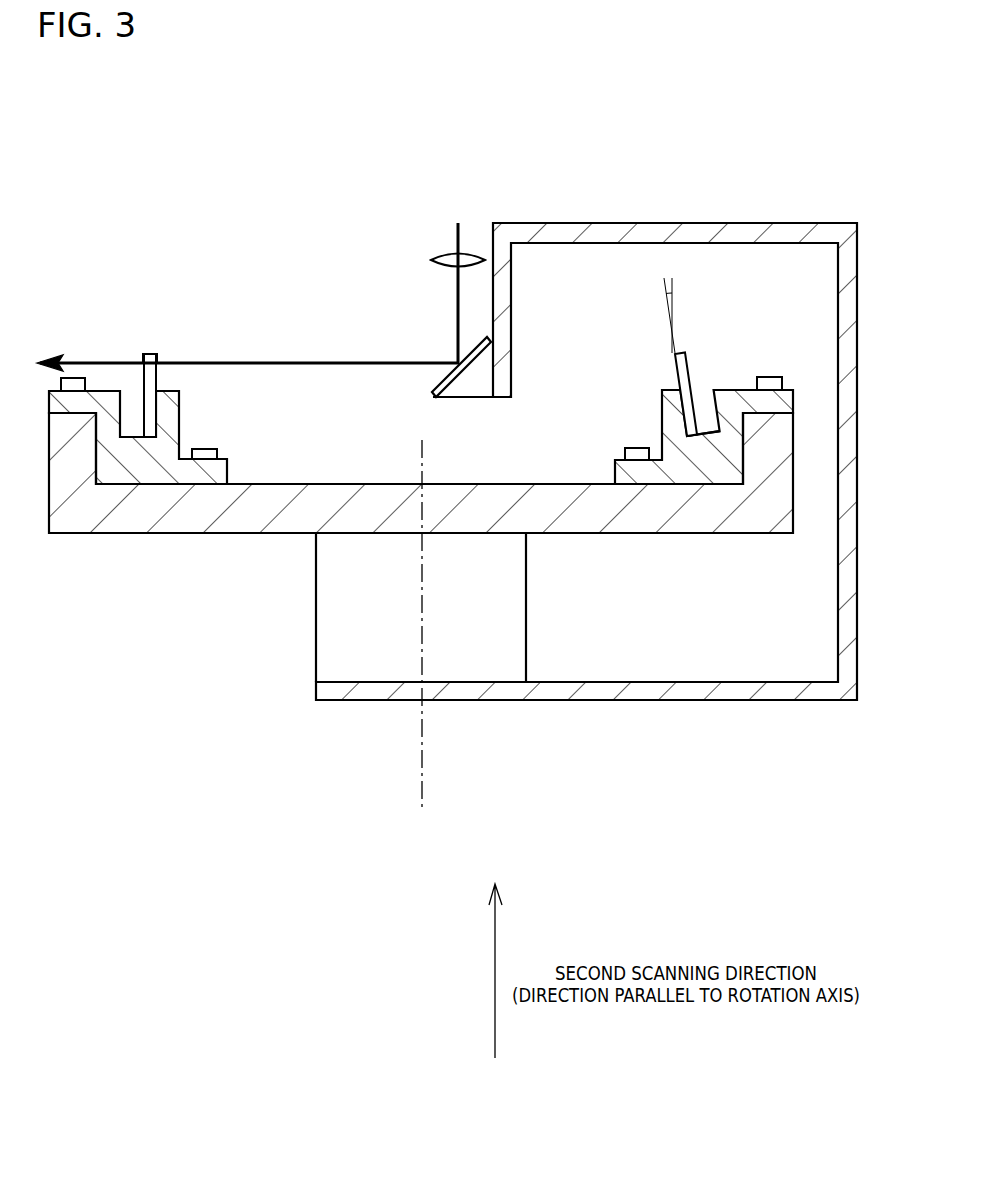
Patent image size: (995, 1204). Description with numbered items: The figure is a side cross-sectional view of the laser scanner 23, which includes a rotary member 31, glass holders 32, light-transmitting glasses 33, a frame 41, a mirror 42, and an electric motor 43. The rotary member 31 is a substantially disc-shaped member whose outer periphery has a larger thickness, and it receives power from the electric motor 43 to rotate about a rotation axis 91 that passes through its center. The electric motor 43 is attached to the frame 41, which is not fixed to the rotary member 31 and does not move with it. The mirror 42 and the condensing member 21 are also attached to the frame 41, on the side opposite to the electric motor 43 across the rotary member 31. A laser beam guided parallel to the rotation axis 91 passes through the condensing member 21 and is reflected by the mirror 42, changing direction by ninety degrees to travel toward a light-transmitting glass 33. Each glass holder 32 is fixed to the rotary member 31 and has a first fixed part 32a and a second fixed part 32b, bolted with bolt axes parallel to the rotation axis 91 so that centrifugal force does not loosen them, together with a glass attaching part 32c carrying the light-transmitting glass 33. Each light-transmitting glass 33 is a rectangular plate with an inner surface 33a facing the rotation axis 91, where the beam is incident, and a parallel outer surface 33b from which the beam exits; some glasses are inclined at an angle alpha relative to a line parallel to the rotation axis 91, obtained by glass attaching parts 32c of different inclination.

The condensing member 21 is at (447, 255).
The laser scanner 23 is at (117, 199).
The rotary member 31 is at (199, 525).
The glass holder 32 is at (214, 416).
The first fixed part 32a is at (615, 470).
The second fixed part 32b is at (748, 395).
The glass attaching part 32c is at (703, 430).
The light-transmitting glass 33 is at (148, 357).
The inner surface 33a is at (158, 360).
The outer surface 33b is at (140, 357).
The frame 41 is at (532, 230).
The mirror 42 is at (428, 395).
The electric motor 43 is at (323, 647).
The rotation axis 91 is at (422, 762).